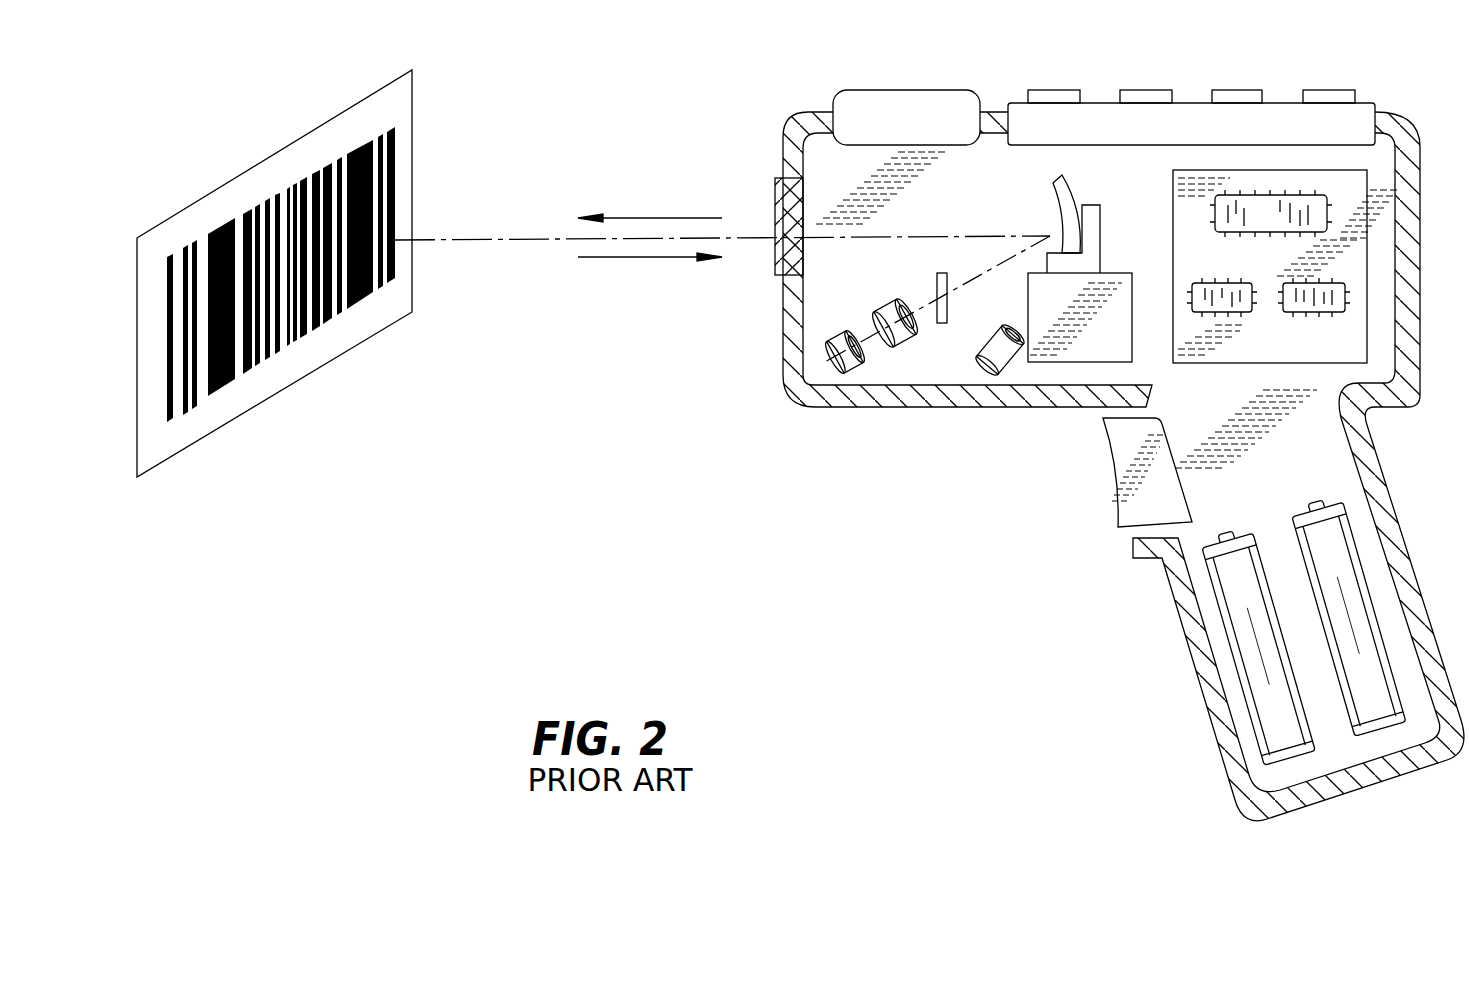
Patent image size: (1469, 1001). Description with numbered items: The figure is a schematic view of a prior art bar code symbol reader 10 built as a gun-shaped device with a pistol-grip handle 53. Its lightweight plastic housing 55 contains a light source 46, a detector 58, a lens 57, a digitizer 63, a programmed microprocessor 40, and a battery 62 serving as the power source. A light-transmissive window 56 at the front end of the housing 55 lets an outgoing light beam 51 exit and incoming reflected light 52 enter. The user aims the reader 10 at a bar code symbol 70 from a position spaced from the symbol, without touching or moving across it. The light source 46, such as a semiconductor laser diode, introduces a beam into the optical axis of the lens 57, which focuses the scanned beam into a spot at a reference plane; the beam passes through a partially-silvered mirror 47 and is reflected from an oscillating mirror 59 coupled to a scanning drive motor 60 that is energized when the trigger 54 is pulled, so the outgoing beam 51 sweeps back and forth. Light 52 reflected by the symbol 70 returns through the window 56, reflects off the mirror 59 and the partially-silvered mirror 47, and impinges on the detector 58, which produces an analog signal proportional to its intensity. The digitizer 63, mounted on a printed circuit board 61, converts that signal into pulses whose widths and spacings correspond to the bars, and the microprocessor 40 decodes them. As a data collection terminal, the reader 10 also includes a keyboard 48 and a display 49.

The bar code symbol reader 10 is at (898, 484).
The programmed microprocessor 40 is at (1253, 222).
The light source 46 is at (850, 373).
The partially-silvered mirror 47 is at (937, 275).
The keyboard 48 is at (1292, 120).
The display 49 is at (911, 115).
The outgoing light beam 51 is at (658, 218).
The incoming reflected light 52 is at (602, 258).
The handle 53 is at (1190, 628).
The trigger 54 is at (1150, 505).
The housing 55 is at (1410, 365).
The light-transmissive window 56 is at (775, 197).
The lens 57 is at (903, 343).
The detector 58 is at (985, 370).
The oscillating mirror 59 is at (1067, 192).
The scanning drive motor 60 is at (1070, 347).
The printed circuit board 61 is at (1367, 257).
The battery 62 is at (1377, 722).
The digitizer 63 is at (1242, 300).
The bar code symbol 70 is at (412, 188).